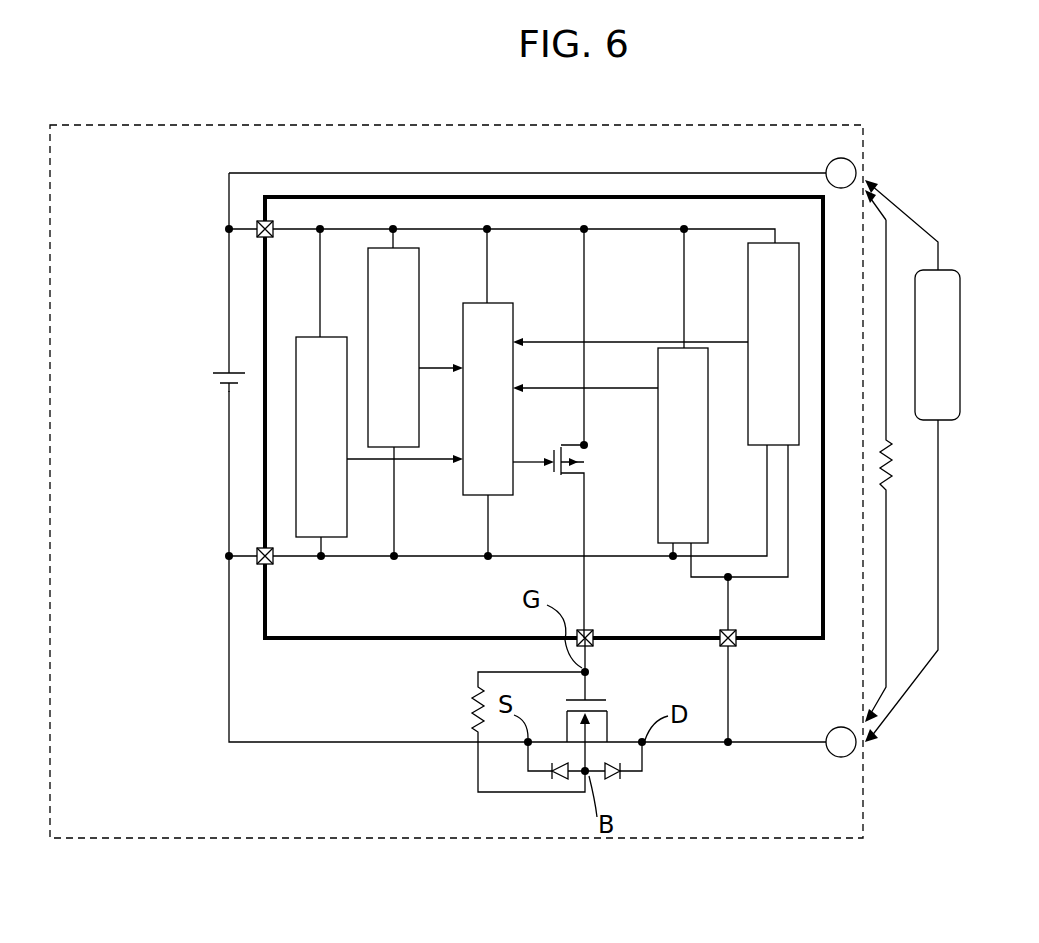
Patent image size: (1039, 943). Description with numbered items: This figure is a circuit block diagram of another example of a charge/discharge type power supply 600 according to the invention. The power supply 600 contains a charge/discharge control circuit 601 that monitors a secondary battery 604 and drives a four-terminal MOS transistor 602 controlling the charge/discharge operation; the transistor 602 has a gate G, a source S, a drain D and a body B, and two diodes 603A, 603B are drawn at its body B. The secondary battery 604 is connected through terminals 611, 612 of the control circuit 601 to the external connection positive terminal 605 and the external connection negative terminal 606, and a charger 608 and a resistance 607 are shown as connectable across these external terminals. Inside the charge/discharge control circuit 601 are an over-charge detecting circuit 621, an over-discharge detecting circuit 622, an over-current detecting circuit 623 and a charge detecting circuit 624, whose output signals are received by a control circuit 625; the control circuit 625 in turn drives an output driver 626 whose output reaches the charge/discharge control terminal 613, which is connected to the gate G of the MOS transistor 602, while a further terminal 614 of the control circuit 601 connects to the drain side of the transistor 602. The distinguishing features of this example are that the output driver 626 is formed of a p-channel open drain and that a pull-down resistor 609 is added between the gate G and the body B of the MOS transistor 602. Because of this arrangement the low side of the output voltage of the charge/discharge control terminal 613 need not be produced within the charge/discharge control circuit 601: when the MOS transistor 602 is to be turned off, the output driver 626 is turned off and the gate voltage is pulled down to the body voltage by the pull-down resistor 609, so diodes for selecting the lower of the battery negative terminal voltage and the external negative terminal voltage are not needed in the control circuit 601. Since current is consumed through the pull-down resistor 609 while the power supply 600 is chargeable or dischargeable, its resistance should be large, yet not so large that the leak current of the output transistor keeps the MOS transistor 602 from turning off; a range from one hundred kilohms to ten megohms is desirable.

The charge type power supply 600 is at (528, 123).
The charge/discharge control circuit 601 is at (322, 196).
The four-terminal MOS transistor 602 is at (610, 728).
The parasitic diode 603A is at (565, 778).
The parasitic diode 603B is at (612, 778).
The secondary battery 604 is at (214, 380).
The external terminal 605 is at (828, 158).
The external terminal 606 is at (828, 754).
The load resistor 607 is at (897, 468).
The charger 608 is at (960, 345).
The pull-down resistor 609 is at (466, 720).
The terminal 611 is at (256, 222).
The terminal 612 is at (272, 563).
The charge/discharge control terminal 613 is at (596, 628).
The terminal 614 is at (738, 627).
The over-charge detecting circuit 621 is at (348, 480).
The over-discharge detecting circuit 622 is at (421, 252).
The over-current detecting circuit 623 is at (708, 453).
The charge detecting circuit 624 is at (748, 257).
The control circuit 625 is at (463, 485).
The charge/discharge control circuit output driver 626 is at (596, 463).